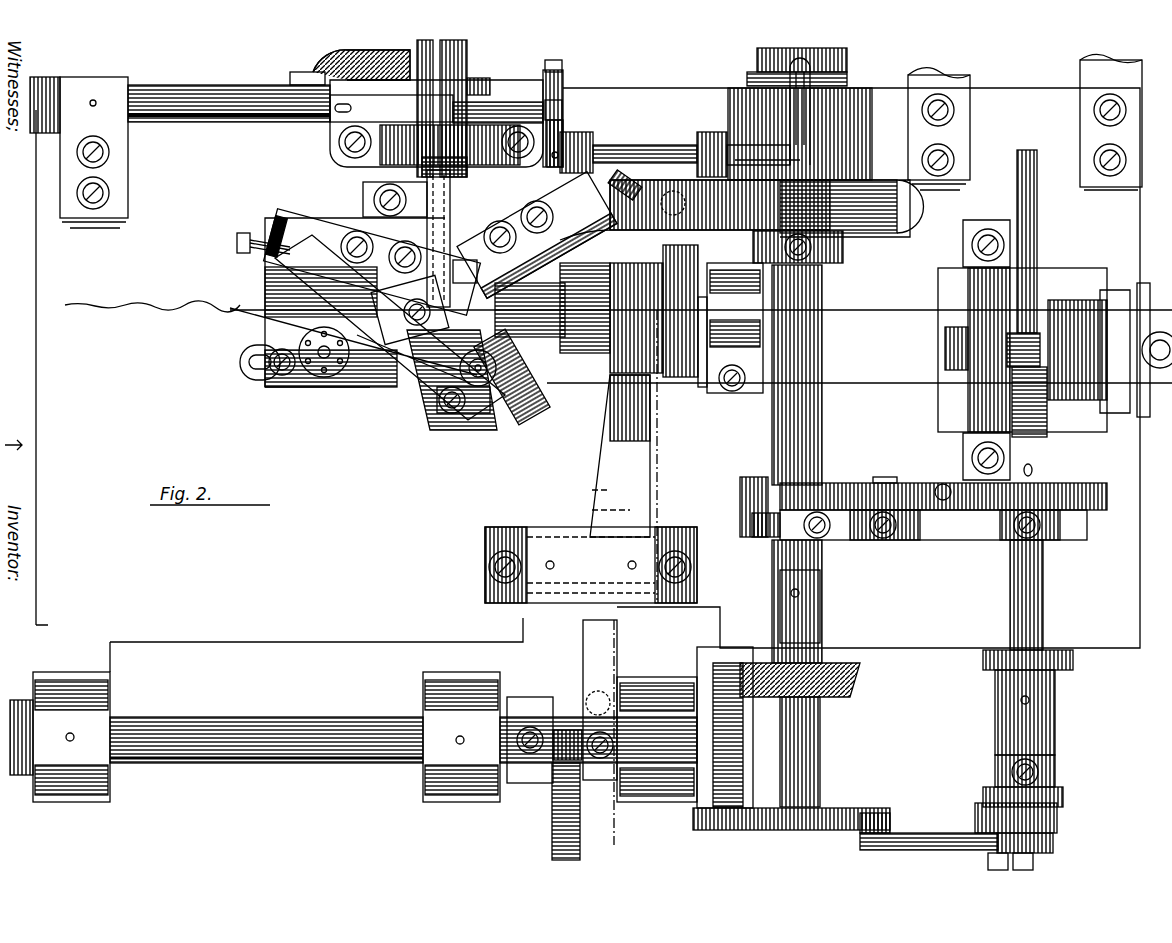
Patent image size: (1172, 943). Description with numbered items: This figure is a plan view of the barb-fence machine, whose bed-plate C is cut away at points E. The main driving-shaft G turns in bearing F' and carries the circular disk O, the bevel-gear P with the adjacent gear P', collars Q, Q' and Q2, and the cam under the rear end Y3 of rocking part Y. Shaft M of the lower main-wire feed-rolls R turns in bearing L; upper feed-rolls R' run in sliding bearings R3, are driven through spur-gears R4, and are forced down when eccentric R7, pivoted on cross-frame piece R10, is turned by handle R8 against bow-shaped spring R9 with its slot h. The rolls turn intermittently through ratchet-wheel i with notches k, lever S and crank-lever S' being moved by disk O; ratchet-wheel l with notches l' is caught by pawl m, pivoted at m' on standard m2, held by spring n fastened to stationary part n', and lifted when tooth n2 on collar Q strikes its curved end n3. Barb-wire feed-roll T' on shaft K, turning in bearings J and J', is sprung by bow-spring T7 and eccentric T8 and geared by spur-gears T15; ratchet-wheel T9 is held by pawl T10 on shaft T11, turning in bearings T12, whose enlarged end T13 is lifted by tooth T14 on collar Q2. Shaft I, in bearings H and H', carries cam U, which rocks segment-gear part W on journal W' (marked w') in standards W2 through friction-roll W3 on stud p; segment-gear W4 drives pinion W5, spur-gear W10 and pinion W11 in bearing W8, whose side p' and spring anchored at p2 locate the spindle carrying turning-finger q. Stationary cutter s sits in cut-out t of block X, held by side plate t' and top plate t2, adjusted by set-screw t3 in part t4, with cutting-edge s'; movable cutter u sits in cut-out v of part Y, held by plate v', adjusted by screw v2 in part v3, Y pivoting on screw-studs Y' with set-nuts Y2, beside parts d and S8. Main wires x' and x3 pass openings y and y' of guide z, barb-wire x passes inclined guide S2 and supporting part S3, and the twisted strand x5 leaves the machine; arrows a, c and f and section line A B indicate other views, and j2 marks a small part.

The bed-plate C is at (604, 380).
The shaft K is at (230, 118).
The bearing J is at (105, 152).
The inner bearing J' is at (411, 108).
The rear curved end of pawl n3 is at (330, 58).
The upper barb-wire feed-roll T' is at (472, 97).
The bow-spring T7 is at (515, 60).
The ratchet-wheel T9 is at (563, 82).
The pawl T10 is at (568, 125).
The shaft T11 is at (640, 145).
The stationary bearings T12 is at (590, 140).
The enlarged end T13 is at (790, 110).
The cog or tooth T14 is at (750, 72).
The spur-gears T15 is at (467, 160).
The eccentric T8 is at (427, 107).
The circular disk O is at (555, 72).
The arrow c is at (627, 45).
The main driving-shaft G is at (790, 850).
The collar Q2 is at (850, 85).
The collar Q' is at (814, 247).
The collar Q is at (841, 472).
The rear end of rocking part Y3 is at (852, 208).
The bracket F' is at (859, 405).
The cut-away points E is at (890, 253).
The handle R8 is at (1035, 195).
The lower main-wire feed-roll R is at (1022, 350).
The bow-shaped spring R9 is at (1040, 232).
The vertically-sliding bearings R3 is at (1040, 253).
The cross-frame piece R10 is at (967, 290).
The upper main-wire feed-roll R' is at (1072, 348).
The spur-gears R4 is at (955, 347).
The eccentric R7 is at (1030, 375).
The turning-finger q is at (1035, 235).
The opening of guide y is at (1115, 337).
The opening of guide y' is at (746, 309).
The guide z is at (1142, 420).
The main wire x' is at (728, 297).
The main wire x3 is at (889, 372).
The ratchet-wheel l is at (945, 511).
The notches l' is at (1041, 491).
The pawl or dog m is at (941, 517).
The pivot m' is at (893, 466).
The stationary standard m2 is at (915, 538).
The spiral spring n is at (944, 477).
The slot h is at (1023, 489).
The shaft M is at (1043, 590).
The bearing L is at (1057, 692).
The notches k is at (995, 795).
The ratchet-wheel i is at (1065, 795).
The lever S is at (929, 824).
The crank-lever S' is at (967, 862).
The bevel-gear P is at (809, 682).
The bevel gear P' is at (707, 727).
The shaft I is at (247, 722).
The bearing H is at (255, 737).
The bearing H' is at (657, 739).
The arrow a is at (280, 775).
The friction-roll W3 is at (563, 720).
The stud p is at (560, 733).
The cam U is at (552, 828).
The section line end B is at (621, 741).
The standards W2 is at (508, 537).
The journal W' is at (600, 418).
The rocking segment-gear part W is at (620, 456).
The segment spur-gear W4 is at (620, 372).
The spur-gear W10 is at (687, 380).
The spring attachment point p2 is at (725, 390).
The arrow f is at (740, 443).
The cog or tooth n2 is at (322, 372).
The stationary bearing W8 is at (580, 285).
The pinion W5 is at (645, 285).
The pinion W11 is at (700, 300).
The section line end A is at (650, 236).
The side of bearing p' is at (710, 245).
The angular rocking part Y is at (584, 206).
The top plate v' is at (537, 235).
The cut-out v is at (583, 189).
The movable cutter u is at (490, 259).
The part d is at (465, 264).
The part of rocking part v3 is at (625, 179).
The adjusting-screw v2 is at (650, 200).
The angular stationary block X is at (285, 225).
The stationary cutter s is at (372, 263).
The set-screw t3 is at (237, 248).
The cut-out t is at (307, 235).
The part of block t4 is at (268, 262).
The top plate t2 is at (376, 261).
The side plate t' is at (410, 309).
The barb-wire x is at (271, 333).
The double strand x5 is at (170, 326).
The supporting part S3 is at (319, 366).
The pointed screw-studs Y' is at (402, 337).
The set-nuts Y2 is at (480, 405).
The part S8 is at (362, 188).
The inclined guide S2 is at (450, 198).
The cutting-edge s' is at (435, 287).
The stationary part n' is at (456, 422).
The part w' is at (472, 309).
The part j2 is at (395, 90).